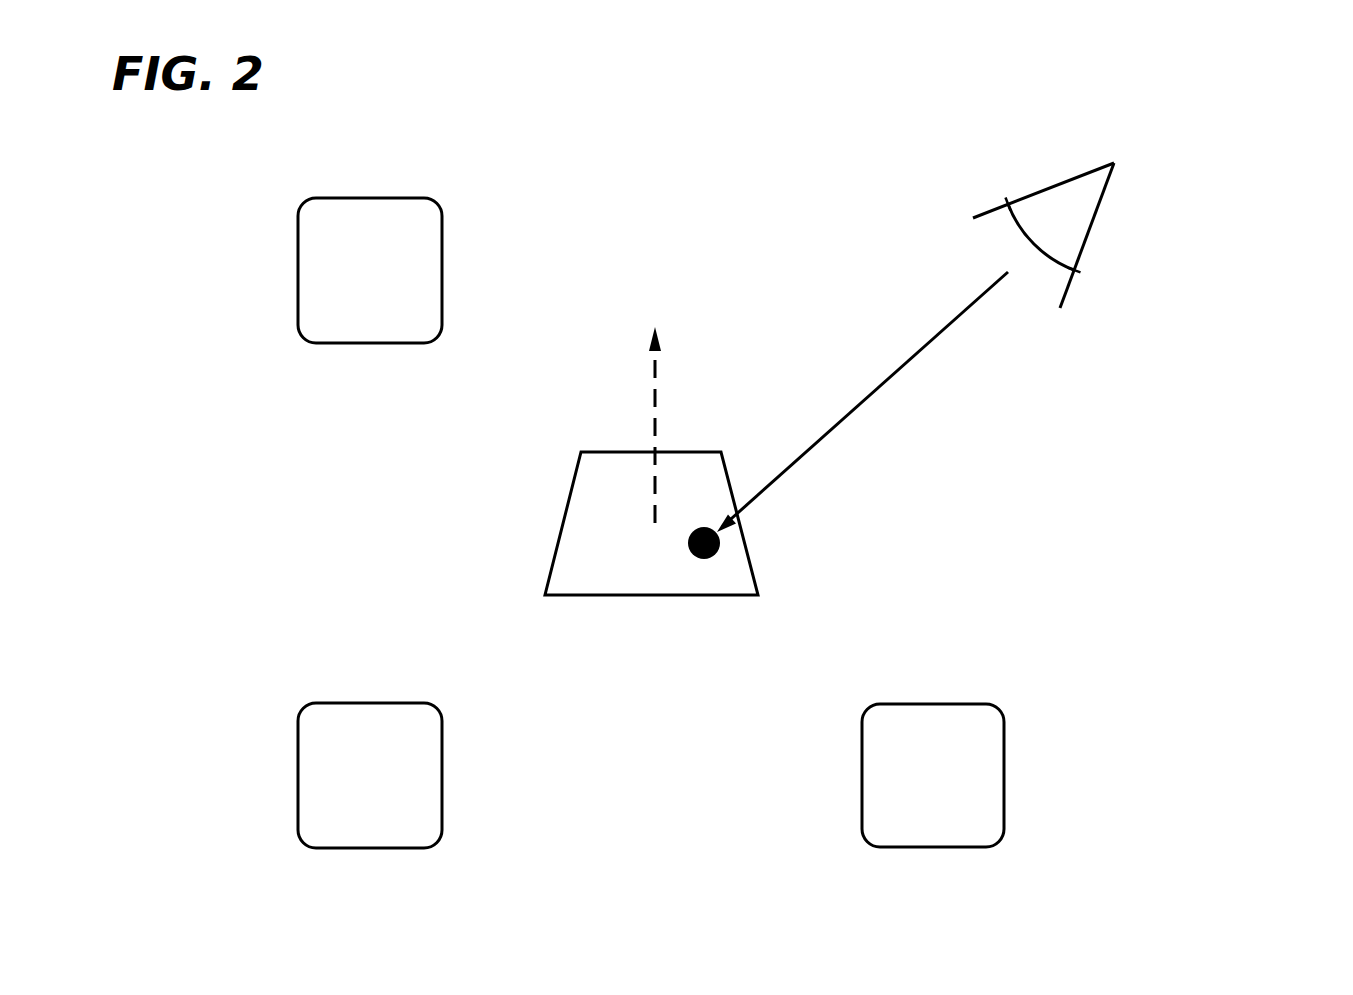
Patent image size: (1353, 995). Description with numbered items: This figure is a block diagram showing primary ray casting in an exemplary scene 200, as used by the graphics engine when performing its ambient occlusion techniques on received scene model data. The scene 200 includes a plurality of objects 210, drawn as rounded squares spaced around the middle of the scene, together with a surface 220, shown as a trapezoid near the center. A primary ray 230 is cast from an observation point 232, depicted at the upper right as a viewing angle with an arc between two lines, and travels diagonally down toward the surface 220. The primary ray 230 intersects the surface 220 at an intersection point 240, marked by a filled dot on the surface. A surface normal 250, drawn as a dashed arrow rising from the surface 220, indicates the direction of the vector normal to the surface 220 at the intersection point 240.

The scene 200 is at (1282, 112).
The objects 210 is at (373, 344).
The surface 220 is at (658, 596).
The primary ray 230 is at (878, 388).
The observation point 232 is at (1092, 212).
The intersection point 240 is at (712, 556).
The surface normal 250 is at (656, 400).